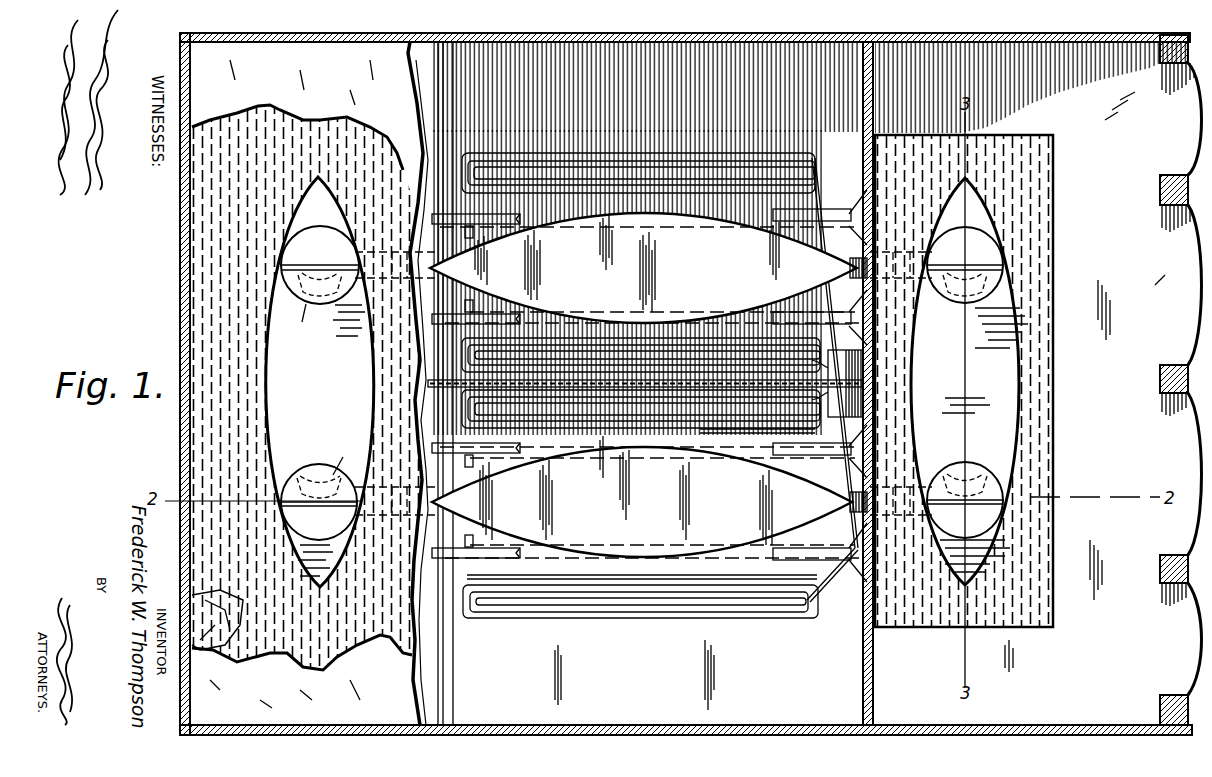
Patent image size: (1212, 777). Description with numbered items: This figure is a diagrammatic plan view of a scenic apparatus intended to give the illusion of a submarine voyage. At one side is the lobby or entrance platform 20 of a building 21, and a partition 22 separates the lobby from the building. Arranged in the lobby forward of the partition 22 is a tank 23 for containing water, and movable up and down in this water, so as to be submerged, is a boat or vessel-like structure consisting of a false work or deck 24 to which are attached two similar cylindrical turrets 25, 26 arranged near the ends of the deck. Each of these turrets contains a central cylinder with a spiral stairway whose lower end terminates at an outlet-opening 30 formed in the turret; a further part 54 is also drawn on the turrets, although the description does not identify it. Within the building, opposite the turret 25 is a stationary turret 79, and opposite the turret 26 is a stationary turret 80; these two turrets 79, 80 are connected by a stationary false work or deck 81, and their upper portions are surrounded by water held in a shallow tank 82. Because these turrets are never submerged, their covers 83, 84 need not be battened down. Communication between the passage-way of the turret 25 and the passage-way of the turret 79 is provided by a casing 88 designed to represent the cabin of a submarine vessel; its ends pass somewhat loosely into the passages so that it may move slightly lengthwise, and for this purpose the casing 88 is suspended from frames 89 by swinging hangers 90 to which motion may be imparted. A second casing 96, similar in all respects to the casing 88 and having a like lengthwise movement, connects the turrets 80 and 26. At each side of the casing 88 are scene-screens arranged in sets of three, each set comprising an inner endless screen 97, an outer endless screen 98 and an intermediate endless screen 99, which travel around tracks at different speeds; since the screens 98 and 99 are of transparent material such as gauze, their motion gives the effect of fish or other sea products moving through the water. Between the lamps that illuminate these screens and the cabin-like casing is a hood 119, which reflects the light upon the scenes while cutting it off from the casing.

The lobby or entrance platform 20 is at (1103, 380).
The building 21 is at (742, 34).
The partition 22 is at (863, 673).
The tank 23 is at (1044, 627).
The false work or deck 24 is at (969, 381).
The turret 25 is at (936, 500).
The turret 26 is at (936, 265).
The outlet-opening 30 is at (837, 383).
The nozzle 54 is at (966, 462).
The turret 79 is at (358, 502).
The turret 80 is at (358, 265).
The false work or deck 81 is at (320, 382).
The shallow tank 82 is at (310, 383).
The cover 83 is at (331, 465).
The cover 84 is at (296, 320).
The casing 88 is at (649, 503).
The frame 89 is at (832, 562).
The swinging hanger 90 is at (790, 215).
The casing 96 is at (648, 267).
The inner endless screen 97 is at (662, 606).
The outer endless screen 98 is at (724, 619).
The intermediate endless screen 99 is at (612, 612).
The hood 119 is at (788, 432).